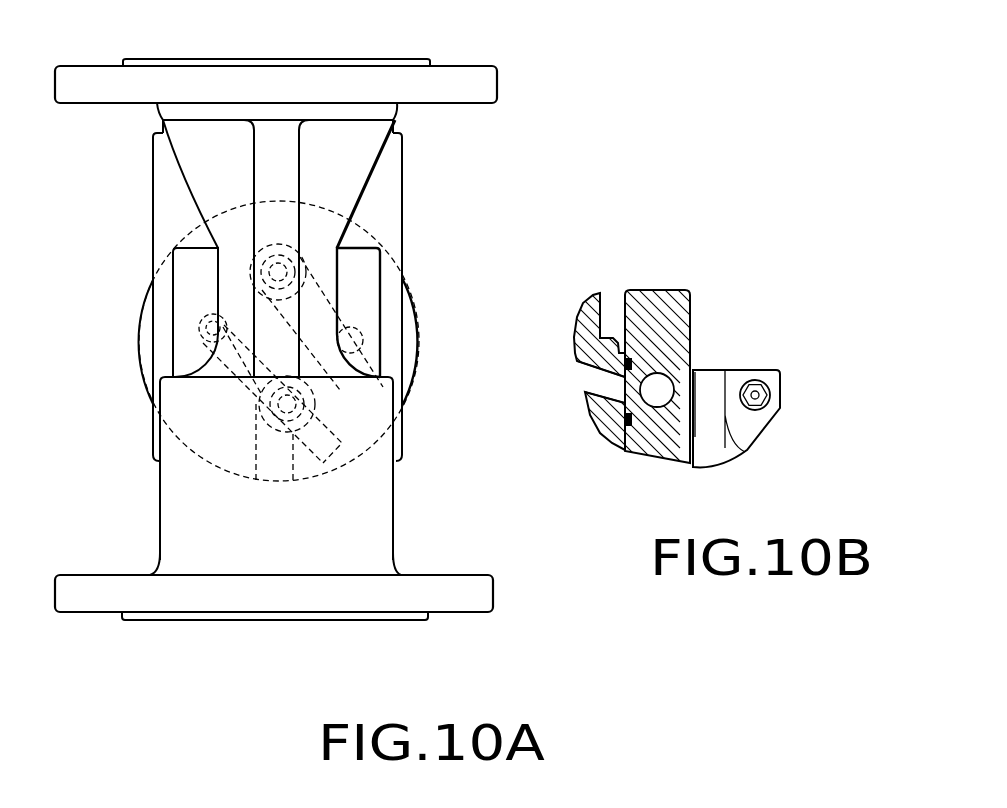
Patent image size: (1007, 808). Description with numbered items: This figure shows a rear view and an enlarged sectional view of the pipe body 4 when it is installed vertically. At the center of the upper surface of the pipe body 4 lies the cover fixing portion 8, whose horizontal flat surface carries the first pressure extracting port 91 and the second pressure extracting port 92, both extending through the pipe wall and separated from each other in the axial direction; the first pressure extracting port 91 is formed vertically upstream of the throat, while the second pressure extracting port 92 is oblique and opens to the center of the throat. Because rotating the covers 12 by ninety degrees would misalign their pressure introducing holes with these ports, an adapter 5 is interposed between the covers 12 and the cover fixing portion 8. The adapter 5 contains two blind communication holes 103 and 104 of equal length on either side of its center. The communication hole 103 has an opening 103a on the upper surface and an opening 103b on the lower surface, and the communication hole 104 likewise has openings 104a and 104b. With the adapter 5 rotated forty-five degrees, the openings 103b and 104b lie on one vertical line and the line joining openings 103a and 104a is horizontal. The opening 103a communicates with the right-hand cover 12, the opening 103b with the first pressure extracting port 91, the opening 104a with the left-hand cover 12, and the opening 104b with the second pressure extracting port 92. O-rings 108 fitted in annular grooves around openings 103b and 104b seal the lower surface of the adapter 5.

In FIG. 10A, the pipe body 4 is at (512, 71).
In FIG. 10A, the adapter 5 is at (122, 327).
In FIG. 10B, the adapter 5 is at (671, 282).
In FIG. 10B, the cover fixing portion 8 is at (613, 338).
In FIG. 10B, the cover 12 is at (778, 386).
In FIG. 10A, the first pressure extracting port 91 is at (252, 486).
In FIG. 10A, the second pressure extracting port 92 is at (250, 272).
In FIG. 10B, the second pressure extracting port 92 is at (583, 373).
In FIG. 10A, the communication hole 103 is at (112, 440).
In FIG. 10B, the communication hole 103 is at (654, 384).
In FIG. 10A, the opening 103a is at (380, 325).
In FIG. 10A, the opening 103b is at (290, 232).
In FIG. 10A, the communication hole 104 is at (300, 481).
In FIG. 10A, the opening 104a is at (201, 403).
In FIG. 10A, the opening 104b is at (403, 452).
In FIG. 10B, the O-ring 108 is at (636, 422).